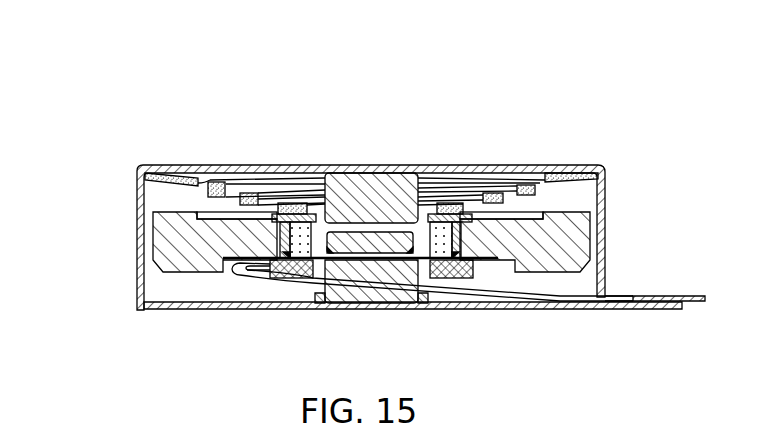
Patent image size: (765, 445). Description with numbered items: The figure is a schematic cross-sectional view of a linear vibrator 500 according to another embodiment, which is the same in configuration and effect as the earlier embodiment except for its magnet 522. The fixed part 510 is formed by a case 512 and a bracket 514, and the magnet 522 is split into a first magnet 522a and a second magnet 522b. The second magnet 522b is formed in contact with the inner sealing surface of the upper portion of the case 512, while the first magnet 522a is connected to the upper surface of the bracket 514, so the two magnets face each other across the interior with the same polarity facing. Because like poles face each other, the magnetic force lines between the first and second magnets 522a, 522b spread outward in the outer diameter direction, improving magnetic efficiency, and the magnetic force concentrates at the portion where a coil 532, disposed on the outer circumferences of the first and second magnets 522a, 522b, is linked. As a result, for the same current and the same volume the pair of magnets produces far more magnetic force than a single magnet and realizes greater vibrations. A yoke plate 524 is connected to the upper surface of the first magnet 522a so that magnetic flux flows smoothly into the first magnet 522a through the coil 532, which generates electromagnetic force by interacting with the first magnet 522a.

The linear vibrator 500 is at (225, 49).
The fixed part 510 is at (55, 262).
The case 512 is at (137, 273).
The bracket 514 is at (141, 309).
The magnet 522 is at (517, 85).
The first magnet 522a is at (445, 247).
The second magnet 522b is at (396, 183).
The yoke plate 524 is at (380, 244).
The coil 532 is at (302, 262).